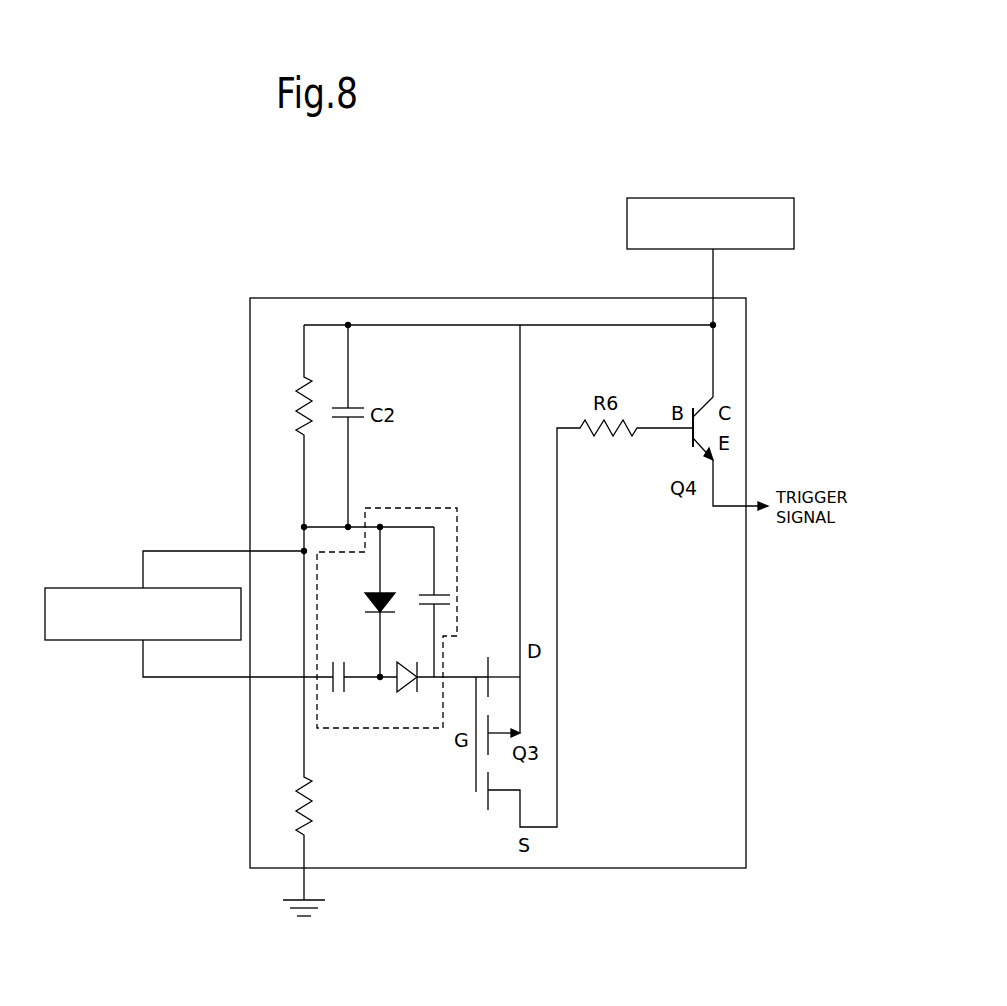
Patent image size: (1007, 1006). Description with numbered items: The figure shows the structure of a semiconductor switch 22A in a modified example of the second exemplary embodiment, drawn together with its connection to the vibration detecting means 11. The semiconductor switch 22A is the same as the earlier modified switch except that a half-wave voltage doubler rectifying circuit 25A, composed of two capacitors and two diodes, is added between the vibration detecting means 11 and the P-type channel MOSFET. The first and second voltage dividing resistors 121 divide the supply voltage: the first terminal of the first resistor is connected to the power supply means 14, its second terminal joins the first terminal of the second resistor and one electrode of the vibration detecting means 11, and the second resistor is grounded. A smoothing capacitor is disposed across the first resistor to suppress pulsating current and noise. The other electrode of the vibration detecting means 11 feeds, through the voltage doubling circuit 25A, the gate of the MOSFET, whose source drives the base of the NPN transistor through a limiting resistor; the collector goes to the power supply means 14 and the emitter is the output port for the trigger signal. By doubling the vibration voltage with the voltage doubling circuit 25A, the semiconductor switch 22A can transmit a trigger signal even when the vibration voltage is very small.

The semiconductor switch 22A is at (668, 128).
The power supply means 14 is at (796, 222).
The vibration detecting means 11 is at (88, 642).
The resistor 121 is at (304, 430).
The half-wave voltage doubler rectifying circuit 25A is at (425, 508).